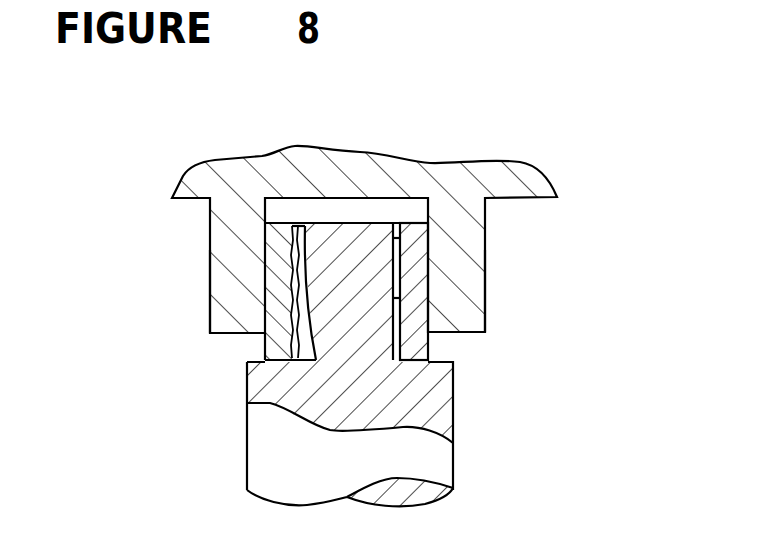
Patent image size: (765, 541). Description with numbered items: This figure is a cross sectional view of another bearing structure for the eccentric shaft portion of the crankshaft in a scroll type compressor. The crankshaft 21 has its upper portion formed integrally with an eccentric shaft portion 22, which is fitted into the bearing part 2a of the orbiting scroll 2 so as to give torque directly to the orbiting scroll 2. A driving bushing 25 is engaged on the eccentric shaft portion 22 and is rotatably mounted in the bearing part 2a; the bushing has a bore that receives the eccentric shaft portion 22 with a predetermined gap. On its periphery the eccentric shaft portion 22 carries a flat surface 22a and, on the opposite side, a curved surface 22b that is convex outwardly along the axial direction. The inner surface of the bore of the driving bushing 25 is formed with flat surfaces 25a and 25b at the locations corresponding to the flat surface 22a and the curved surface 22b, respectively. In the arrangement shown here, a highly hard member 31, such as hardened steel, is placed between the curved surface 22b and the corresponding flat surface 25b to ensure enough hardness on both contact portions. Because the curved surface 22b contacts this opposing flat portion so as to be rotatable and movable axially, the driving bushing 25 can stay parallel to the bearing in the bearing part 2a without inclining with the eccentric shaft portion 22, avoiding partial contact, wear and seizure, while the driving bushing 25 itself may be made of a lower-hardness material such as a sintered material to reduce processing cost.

The orbiting scroll 2 is at (433, 168).
The bearing part 2a is at (452, 282).
The crankshaft 21 is at (427, 454).
The eccentric shaft portion 22 is at (355, 243).
The flat surface 22a is at (400, 299).
The curved surface 22b is at (292, 238).
The driving bushing 25 is at (420, 345).
The flat surface 25a is at (396, 250).
The flat surface 25b is at (290, 356).
The highly hard member 31 is at (292, 268).